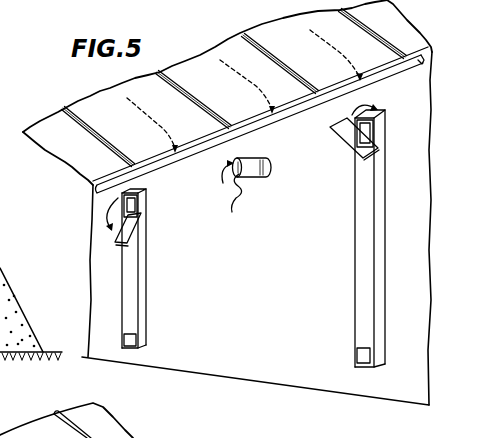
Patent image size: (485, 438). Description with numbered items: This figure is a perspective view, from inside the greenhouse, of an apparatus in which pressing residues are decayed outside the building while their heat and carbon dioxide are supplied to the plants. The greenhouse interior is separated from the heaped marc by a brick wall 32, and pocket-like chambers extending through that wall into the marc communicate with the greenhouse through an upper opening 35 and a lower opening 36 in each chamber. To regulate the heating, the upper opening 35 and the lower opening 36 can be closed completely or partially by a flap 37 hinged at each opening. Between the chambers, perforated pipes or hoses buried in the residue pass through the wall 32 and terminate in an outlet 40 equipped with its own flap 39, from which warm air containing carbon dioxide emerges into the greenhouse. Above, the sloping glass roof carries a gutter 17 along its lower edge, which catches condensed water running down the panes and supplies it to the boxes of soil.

The gutter 17 is at (408, 65).
The brick wall 32 is at (407, 225).
The upper opening 35 is at (133, 202).
The lower opening 36 is at (92, 341).
The flap 37 is at (130, 228).
The flap 39 is at (242, 203).
The outlet 40 is at (257, 177).